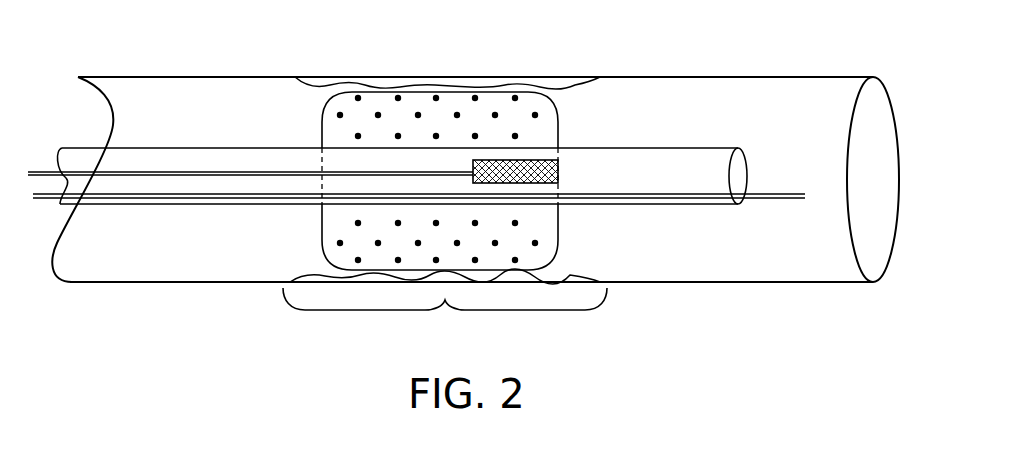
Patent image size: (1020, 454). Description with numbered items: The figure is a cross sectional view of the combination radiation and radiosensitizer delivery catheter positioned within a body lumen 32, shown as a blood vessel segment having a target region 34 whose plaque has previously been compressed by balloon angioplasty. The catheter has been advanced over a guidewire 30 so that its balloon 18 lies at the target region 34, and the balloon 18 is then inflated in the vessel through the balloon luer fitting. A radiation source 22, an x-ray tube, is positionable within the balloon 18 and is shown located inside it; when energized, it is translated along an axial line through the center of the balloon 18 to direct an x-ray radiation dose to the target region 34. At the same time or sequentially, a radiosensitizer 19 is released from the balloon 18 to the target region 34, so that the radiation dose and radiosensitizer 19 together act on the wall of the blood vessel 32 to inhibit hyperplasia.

The balloon 18 is at (417, 100).
The radiosensitizer 19 is at (341, 113).
The radiation source 22 is at (500, 160).
The guidewire 30 is at (757, 198).
The body lumen 32 is at (732, 85).
The target region 34 is at (445, 318).